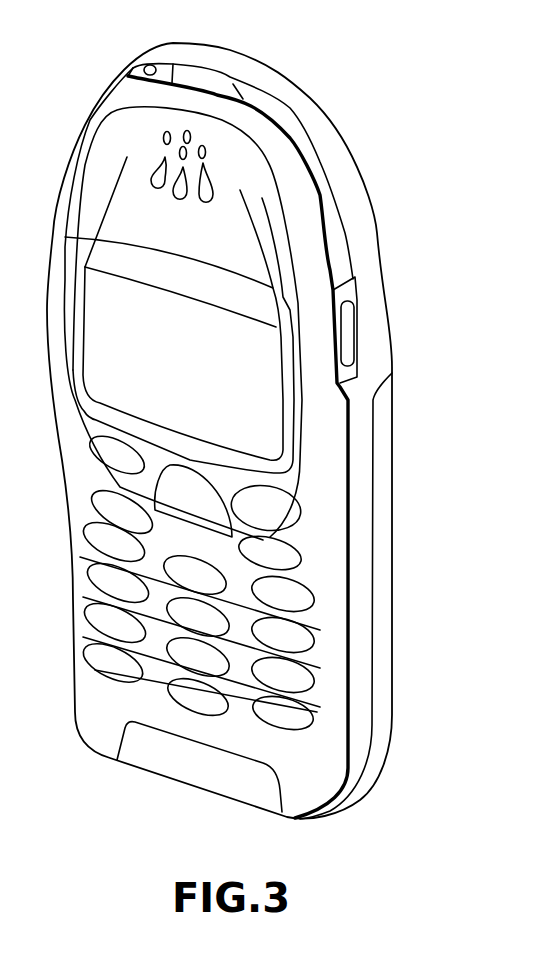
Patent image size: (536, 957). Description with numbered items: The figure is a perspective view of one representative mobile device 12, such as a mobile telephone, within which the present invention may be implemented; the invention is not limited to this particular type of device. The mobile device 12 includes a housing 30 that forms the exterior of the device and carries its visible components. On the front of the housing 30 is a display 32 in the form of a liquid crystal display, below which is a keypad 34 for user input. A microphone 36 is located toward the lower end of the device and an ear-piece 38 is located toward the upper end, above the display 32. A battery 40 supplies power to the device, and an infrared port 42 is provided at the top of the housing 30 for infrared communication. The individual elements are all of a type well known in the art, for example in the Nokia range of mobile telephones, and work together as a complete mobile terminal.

The mobile device 12 is at (323, 67).
The housing 30 is at (357, 207).
The display 32 is at (263, 397).
The keypad 34 is at (280, 720).
The microphone 36 is at (143, 750).
The ear-piece 38 is at (170, 163).
The battery 40 is at (382, 695).
The infrared port 42 is at (203, 80).